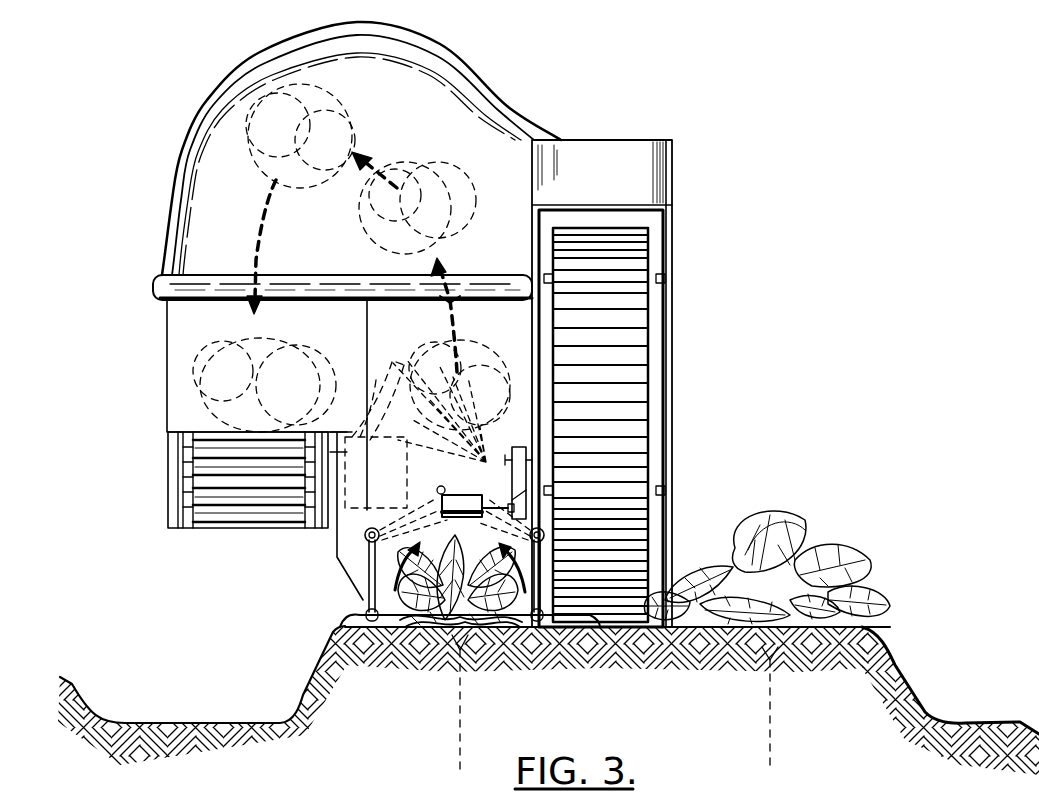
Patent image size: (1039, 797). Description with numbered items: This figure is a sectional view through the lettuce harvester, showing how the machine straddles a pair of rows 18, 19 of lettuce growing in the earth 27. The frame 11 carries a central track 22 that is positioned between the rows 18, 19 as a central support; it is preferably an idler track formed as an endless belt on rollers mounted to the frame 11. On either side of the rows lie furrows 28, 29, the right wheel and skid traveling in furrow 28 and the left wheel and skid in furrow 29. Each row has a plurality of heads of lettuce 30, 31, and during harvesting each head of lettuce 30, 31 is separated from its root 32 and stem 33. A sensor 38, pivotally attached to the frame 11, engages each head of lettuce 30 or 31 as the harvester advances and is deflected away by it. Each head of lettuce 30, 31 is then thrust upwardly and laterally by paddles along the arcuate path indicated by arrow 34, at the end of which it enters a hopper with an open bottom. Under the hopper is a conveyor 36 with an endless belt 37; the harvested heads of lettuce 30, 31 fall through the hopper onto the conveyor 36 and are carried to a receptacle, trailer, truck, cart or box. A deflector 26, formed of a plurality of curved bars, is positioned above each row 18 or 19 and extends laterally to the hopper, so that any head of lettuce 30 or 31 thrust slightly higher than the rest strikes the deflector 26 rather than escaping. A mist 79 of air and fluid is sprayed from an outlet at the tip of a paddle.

The frame 11 is at (643, 188).
The row of lettuce 18 is at (458, 743).
The row of lettuce 19 is at (772, 745).
The track 22 is at (630, 355).
The deflector 26 is at (467, 80).
The earth 27 is at (635, 655).
The furrow 28 is at (200, 710).
The furrow 29 is at (980, 705).
The head of lettuce 30 is at (460, 175).
The head of lettuce 31 is at (775, 535).
The root 32 is at (455, 688).
The stem 33 is at (760, 668).
The arrow 34 is at (380, 158).
The conveyor 36 is at (180, 470).
The endless belt 37 is at (245, 530).
The sensor 38 is at (520, 445).
The mist 79 is at (468, 455).